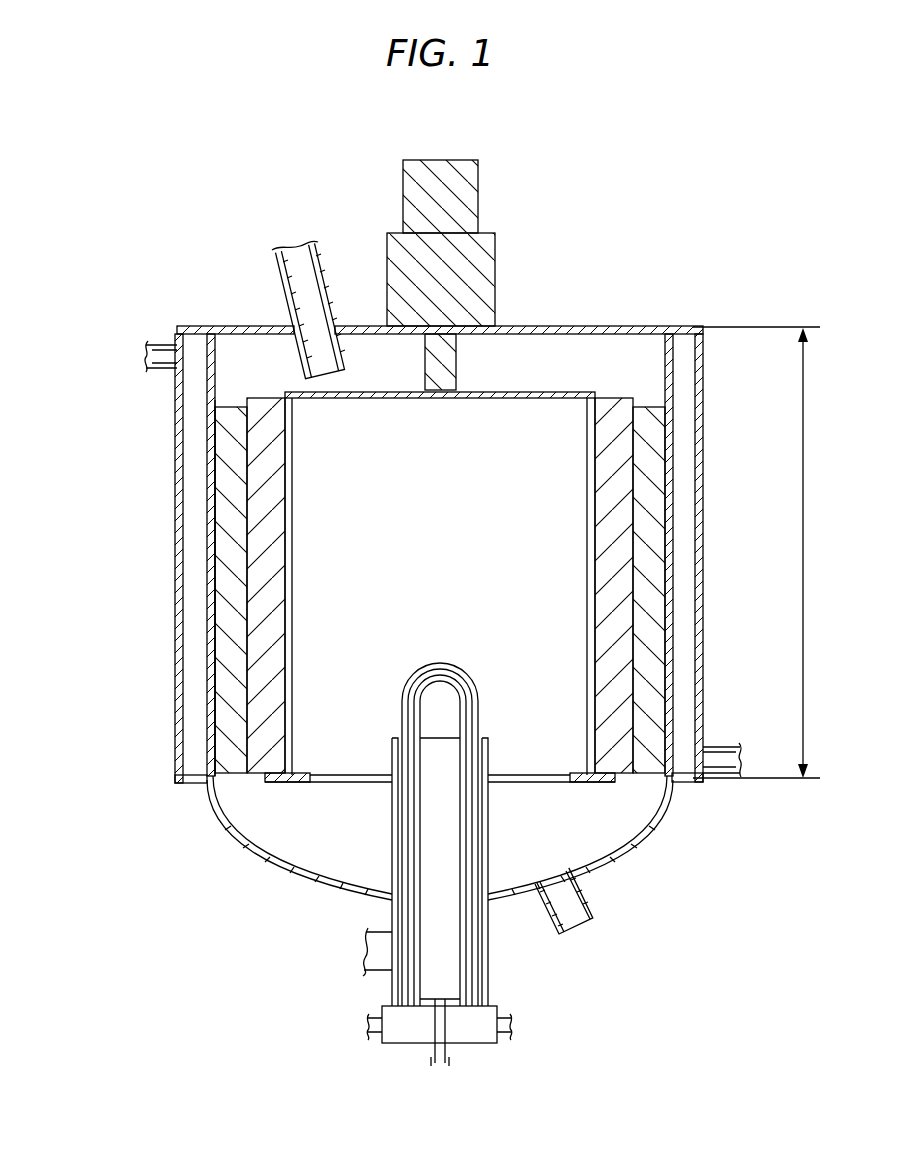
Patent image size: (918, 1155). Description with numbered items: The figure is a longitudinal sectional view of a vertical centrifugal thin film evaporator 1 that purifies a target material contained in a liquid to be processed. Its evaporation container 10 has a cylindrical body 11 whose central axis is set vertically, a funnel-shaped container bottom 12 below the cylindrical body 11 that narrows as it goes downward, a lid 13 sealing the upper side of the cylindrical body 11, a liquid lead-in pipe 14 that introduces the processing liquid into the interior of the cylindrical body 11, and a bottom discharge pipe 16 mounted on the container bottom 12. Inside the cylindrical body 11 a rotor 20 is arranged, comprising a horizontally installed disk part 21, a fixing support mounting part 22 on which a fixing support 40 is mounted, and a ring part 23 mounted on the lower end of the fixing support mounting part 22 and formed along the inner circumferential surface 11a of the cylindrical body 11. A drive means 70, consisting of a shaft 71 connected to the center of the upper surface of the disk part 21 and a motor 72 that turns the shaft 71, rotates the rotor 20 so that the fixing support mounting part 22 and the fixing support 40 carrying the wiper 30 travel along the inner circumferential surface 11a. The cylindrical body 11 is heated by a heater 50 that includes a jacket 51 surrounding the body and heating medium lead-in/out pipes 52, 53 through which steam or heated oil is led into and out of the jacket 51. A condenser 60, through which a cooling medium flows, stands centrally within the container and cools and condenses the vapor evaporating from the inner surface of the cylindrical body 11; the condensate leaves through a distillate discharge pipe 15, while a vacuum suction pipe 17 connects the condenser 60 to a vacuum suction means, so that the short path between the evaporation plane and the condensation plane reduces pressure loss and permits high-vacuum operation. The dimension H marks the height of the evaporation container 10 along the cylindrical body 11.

The vertical centrifugal thin film evaporator 1 is at (254, 108).
The evaporation container 10 is at (634, 314).
The cylindrical body 11 is at (208, 470).
The inner circumferential surface 11a is at (222, 526).
The container bottom 12 is at (310, 877).
The lid 13 is at (232, 327).
The liquid lead-in pipe 14 is at (321, 272).
The distillate discharge pipe 15 is at (445, 1053).
The bottom discharge pipe 16 is at (592, 896).
The vacuum suction pipe 17 is at (382, 963).
The rotor 20 is at (558, 378).
The disk part 21 is at (488, 400).
The fixing support mounting part 22 is at (292, 560).
The ring part 23 is at (293, 782).
The wiper 30 is at (220, 735).
The fixing support 40 is at (252, 767).
The heater 50 is at (168, 424).
The jacket 51 is at (178, 657).
The heating medium lead-in/out pipe 52 is at (725, 745).
The heating medium lead-in/out pipe 53 is at (160, 345).
The condenser 60 is at (442, 663).
The drive means 70 is at (496, 221).
The shaft 71 is at (457, 353).
The motor 72 is at (497, 272).
The height of reaction vessel H is at (765, 552).